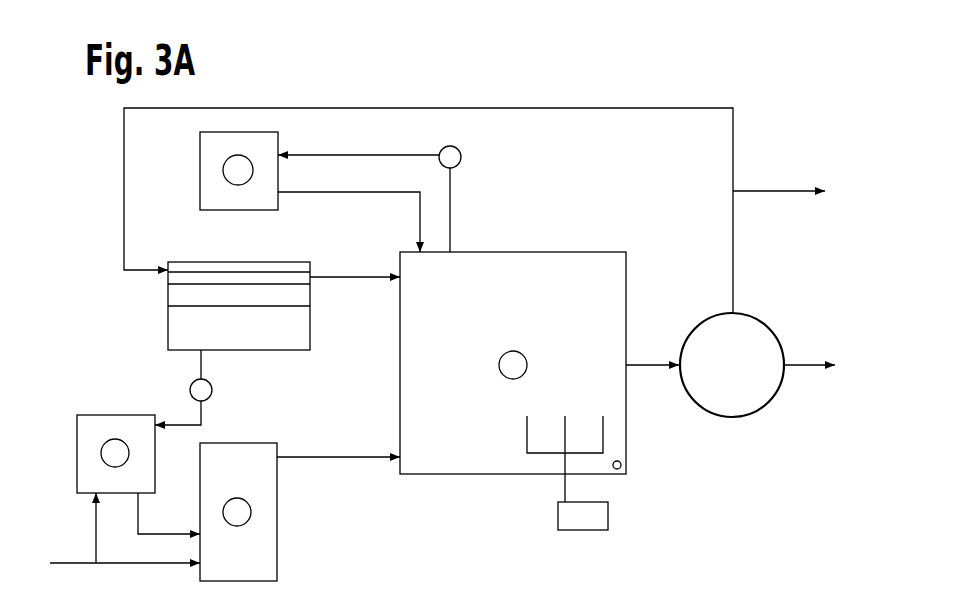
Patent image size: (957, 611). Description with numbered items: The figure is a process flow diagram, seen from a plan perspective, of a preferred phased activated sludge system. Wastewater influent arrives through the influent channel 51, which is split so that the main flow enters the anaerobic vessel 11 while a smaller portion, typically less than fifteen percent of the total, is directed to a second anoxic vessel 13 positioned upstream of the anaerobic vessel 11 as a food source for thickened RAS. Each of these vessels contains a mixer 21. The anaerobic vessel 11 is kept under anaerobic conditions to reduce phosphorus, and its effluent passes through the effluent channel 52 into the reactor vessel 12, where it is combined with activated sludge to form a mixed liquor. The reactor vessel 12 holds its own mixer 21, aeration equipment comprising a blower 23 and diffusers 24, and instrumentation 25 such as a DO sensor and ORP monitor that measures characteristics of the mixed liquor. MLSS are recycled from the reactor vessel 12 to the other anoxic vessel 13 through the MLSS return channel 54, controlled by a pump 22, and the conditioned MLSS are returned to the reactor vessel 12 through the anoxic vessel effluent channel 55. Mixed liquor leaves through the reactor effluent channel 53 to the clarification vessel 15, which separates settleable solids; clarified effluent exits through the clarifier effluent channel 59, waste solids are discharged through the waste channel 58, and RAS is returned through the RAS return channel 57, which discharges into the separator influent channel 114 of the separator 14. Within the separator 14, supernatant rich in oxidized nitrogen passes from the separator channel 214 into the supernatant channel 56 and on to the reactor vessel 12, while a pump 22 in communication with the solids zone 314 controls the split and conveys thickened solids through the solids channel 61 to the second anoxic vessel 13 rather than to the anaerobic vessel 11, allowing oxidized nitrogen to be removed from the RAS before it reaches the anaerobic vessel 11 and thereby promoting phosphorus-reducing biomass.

The anaerobic vessel 11 is at (268, 572).
The reactor vessel 12 is at (565, 251).
The anoxic vessel 13 is at (200, 193).
The separator 14 is at (168, 326).
The separator influent channel 114 is at (215, 267).
The separator channel 214 is at (278, 284).
The solids zone 314 is at (297, 335).
The clarification vessel 15 is at (766, 406).
The mixer 21 is at (227, 158).
The pump 22 is at (450, 146).
The blower 23 is at (608, 521).
The diffusers 24 is at (528, 430).
The instrumentation 25 is at (624, 460).
The influent channel 51 is at (95, 540).
The effluent channel 52 is at (362, 460).
The reactor effluent channel 53 is at (642, 362).
The MLSS return channel 54 is at (343, 154).
The anoxic vessel effluent channel 55 is at (347, 193).
The supernatant channel 56 is at (362, 280).
The RAS return channel 57 is at (445, 108).
The waste channel 58 is at (768, 191).
The clarifier effluent channel 59 is at (799, 363).
The solids channel 61 is at (203, 423).